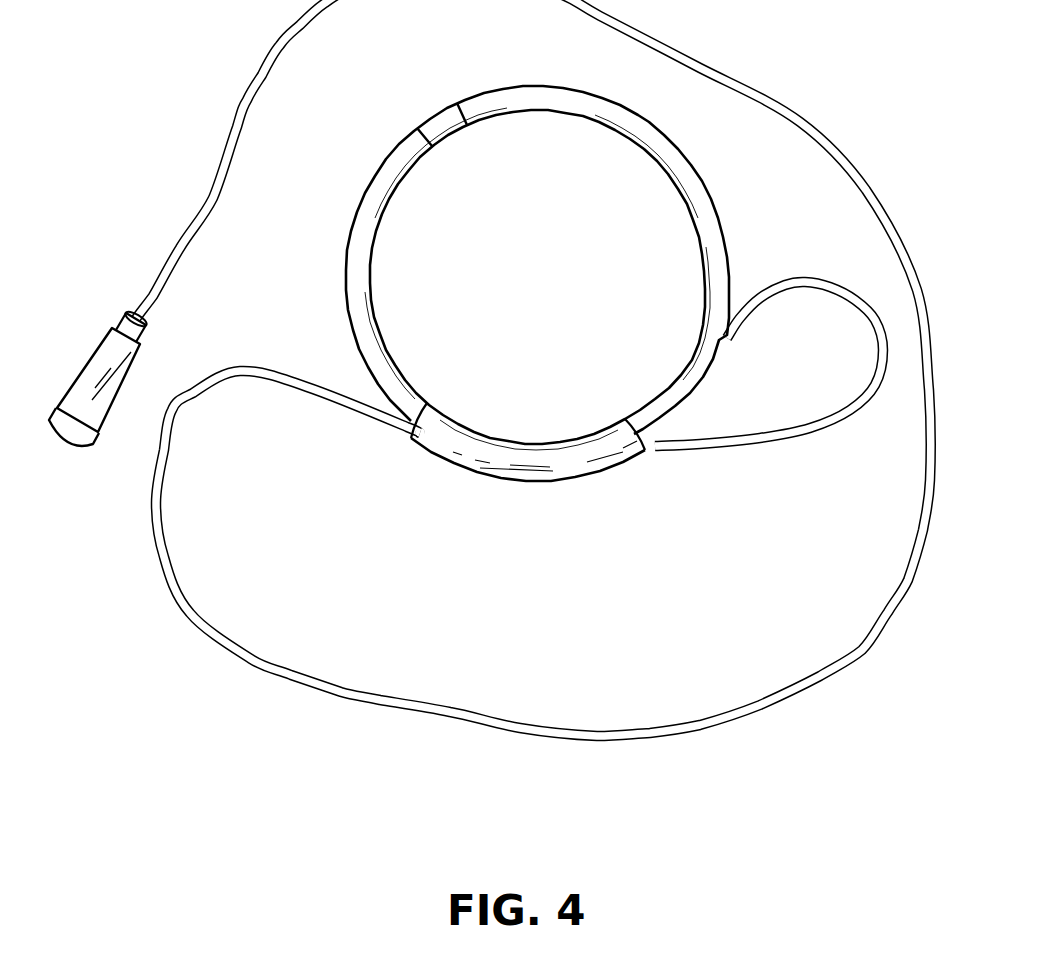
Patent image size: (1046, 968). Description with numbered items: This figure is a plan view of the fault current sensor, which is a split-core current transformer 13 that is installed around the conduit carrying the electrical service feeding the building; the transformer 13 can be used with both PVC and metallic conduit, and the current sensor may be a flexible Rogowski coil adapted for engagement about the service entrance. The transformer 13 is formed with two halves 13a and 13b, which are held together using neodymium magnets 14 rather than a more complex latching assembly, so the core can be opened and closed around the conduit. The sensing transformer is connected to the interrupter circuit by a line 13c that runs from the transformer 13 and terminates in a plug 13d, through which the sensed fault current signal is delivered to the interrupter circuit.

The split-core current transformer 13 is at (298, 265).
The transformer half 13a is at (365, 257).
The transformer half 13b is at (596, 117).
The line 13c is at (830, 681).
The plug 13d is at (96, 365).
The neodymium magnets 14 is at (427, 131).